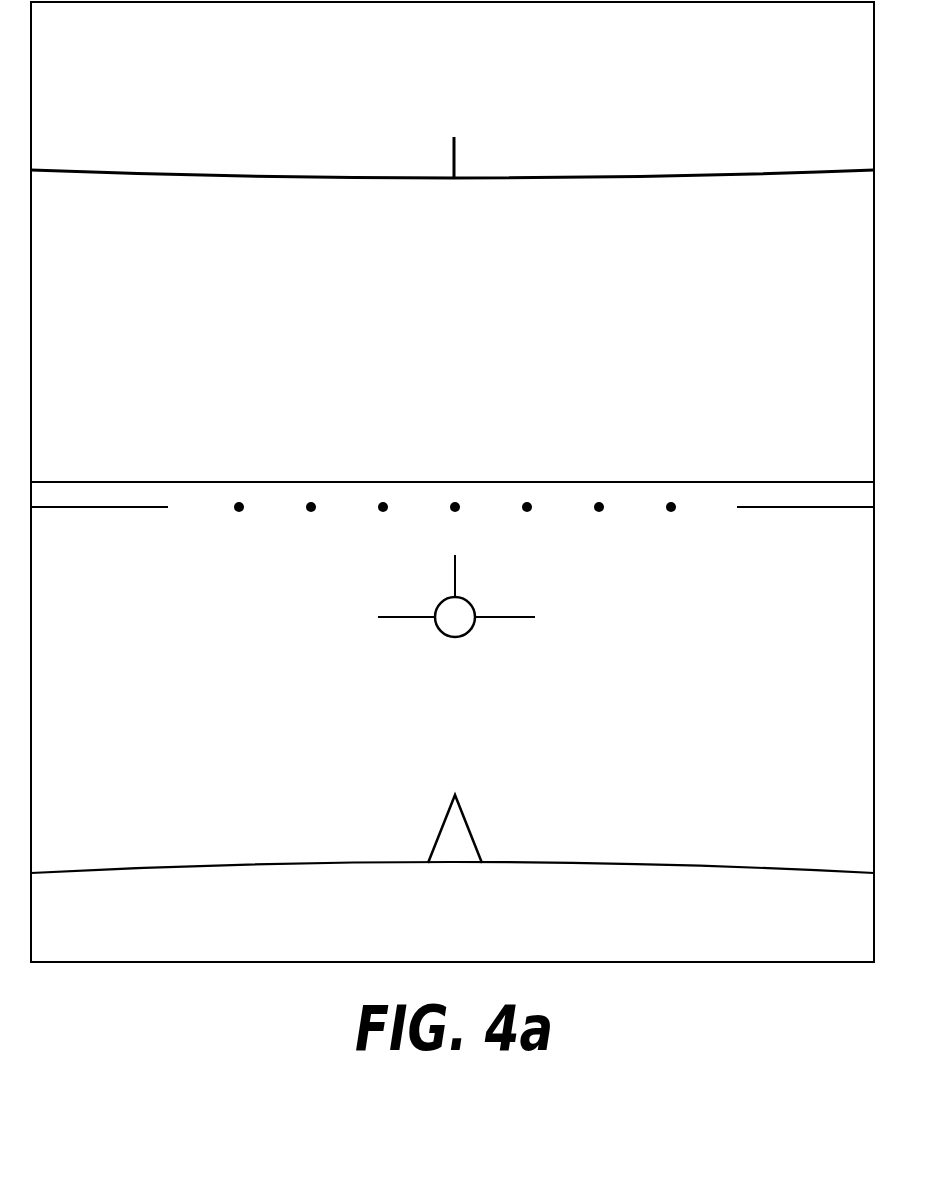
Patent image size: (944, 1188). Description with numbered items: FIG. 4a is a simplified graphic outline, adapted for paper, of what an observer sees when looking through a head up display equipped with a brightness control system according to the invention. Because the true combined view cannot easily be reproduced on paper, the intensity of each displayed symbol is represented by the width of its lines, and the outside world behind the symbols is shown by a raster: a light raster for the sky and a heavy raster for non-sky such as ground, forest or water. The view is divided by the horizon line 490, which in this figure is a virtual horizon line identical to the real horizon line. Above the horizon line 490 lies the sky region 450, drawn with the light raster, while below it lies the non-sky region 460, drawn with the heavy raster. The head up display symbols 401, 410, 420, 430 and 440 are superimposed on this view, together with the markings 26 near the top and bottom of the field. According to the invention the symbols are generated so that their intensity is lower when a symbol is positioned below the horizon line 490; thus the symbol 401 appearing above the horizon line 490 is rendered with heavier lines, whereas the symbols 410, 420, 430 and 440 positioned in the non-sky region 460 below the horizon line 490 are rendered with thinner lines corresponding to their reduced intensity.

The alignment marks 26 is at (455, 461).
The head up display symbol 401 is at (645, 176).
The head up display symbol 410 is at (575, 862).
The head up display symbol 420 is at (505, 612).
The head up display symbol 430 is at (239, 502).
The head up display symbol 440 is at (814, 509).
The upper region 450 is at (137, 283).
The lower stippled region 460 is at (145, 681).
The horizon line 490 is at (446, 481).